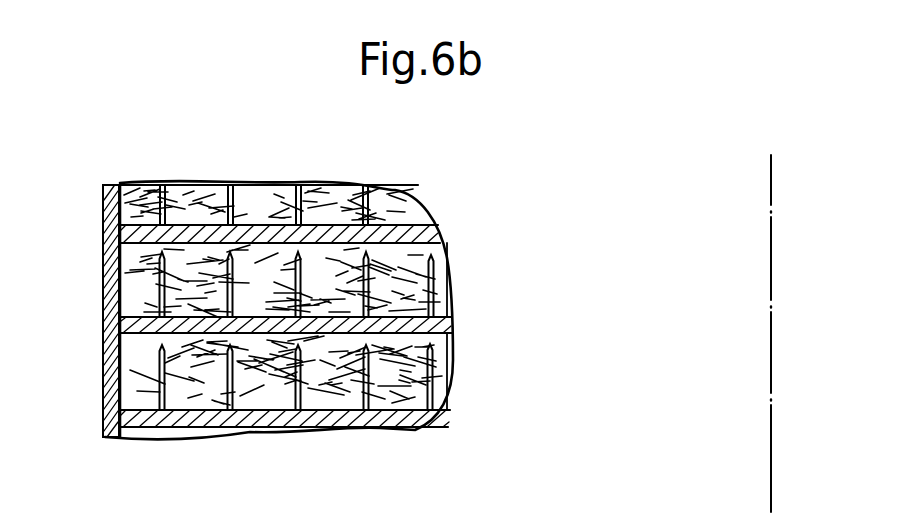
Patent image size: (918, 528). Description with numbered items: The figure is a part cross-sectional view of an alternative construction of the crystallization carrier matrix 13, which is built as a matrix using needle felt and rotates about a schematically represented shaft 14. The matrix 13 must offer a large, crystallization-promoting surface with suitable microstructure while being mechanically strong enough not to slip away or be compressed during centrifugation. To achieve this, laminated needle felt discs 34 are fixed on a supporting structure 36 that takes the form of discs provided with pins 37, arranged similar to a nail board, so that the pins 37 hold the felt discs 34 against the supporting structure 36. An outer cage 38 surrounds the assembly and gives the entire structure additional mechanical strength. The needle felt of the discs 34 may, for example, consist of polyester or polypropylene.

The crystallization carrier matrix 13 is at (253, 183).
The shaft 14 is at (771, 323).
The needle felt discs 34 is at (433, 286).
The supporting structure 36 is at (247, 415).
The pins 37 is at (405, 260).
The outer cage 38 is at (108, 259).